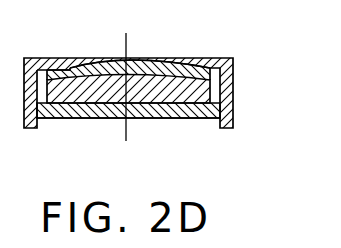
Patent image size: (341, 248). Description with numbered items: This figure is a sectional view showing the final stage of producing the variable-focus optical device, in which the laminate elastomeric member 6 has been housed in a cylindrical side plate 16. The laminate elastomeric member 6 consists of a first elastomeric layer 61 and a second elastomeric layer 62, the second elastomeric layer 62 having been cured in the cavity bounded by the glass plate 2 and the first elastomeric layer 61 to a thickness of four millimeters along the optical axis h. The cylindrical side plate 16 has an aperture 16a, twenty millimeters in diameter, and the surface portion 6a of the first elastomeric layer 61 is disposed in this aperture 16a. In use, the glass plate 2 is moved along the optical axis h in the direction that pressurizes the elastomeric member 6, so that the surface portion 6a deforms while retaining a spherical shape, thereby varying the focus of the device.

The cylindrical side plate 16 is at (39, 58).
The aperture 16a is at (84, 60).
The laminate elastomeric member 6 is at (178, 89).
The first elastomeric layer 61 is at (203, 78).
The second elastomeric layer 62 is at (203, 97).
The surface portion 6a is at (129, 58).
The glass plate 2 is at (67, 120).
The optical axis h is at (127, 100).